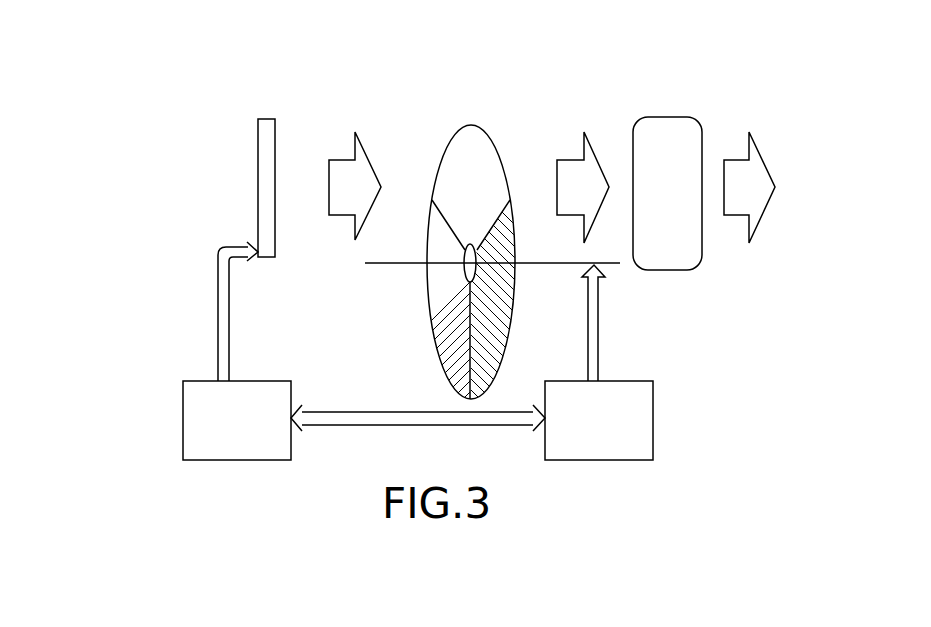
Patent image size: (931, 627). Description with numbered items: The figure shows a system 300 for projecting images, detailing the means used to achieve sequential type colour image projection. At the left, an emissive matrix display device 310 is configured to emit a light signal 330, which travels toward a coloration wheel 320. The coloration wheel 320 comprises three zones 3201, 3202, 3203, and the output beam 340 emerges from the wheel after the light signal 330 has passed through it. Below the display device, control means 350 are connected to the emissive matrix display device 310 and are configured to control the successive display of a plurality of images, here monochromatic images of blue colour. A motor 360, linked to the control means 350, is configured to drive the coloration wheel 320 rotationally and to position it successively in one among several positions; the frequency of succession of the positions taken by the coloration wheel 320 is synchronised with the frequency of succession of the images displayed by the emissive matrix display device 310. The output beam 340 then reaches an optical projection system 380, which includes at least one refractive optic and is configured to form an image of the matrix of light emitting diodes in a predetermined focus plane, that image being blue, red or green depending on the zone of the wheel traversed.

The system for projecting images 300 is at (322, 74).
The emissive matrix display device 310 is at (265, 135).
The coloration wheel 320 is at (475, 114).
The zone of the coloration wheel 3201 is at (452, 163).
The zone of the coloration wheel 3202 is at (500, 322).
The zone of the coloration wheel 3203 is at (430, 320).
The light signal 330 is at (353, 163).
The output beam 340 is at (573, 170).
The control means 350 is at (197, 398).
The motor 360 is at (643, 403).
The optical projection system 380 is at (665, 135).